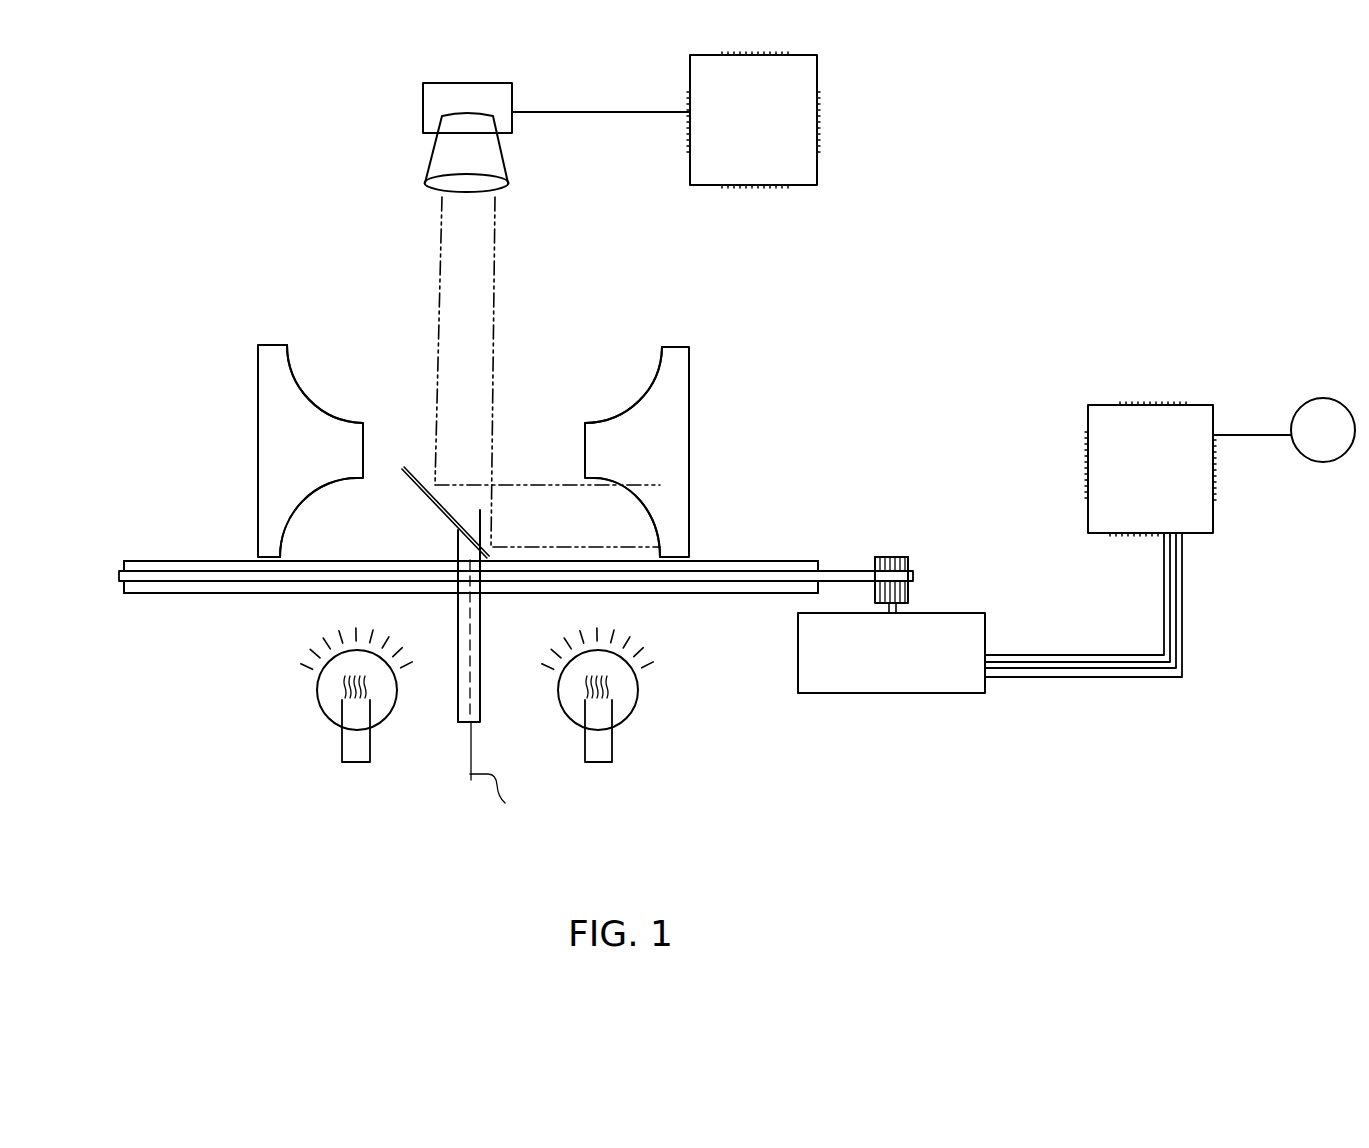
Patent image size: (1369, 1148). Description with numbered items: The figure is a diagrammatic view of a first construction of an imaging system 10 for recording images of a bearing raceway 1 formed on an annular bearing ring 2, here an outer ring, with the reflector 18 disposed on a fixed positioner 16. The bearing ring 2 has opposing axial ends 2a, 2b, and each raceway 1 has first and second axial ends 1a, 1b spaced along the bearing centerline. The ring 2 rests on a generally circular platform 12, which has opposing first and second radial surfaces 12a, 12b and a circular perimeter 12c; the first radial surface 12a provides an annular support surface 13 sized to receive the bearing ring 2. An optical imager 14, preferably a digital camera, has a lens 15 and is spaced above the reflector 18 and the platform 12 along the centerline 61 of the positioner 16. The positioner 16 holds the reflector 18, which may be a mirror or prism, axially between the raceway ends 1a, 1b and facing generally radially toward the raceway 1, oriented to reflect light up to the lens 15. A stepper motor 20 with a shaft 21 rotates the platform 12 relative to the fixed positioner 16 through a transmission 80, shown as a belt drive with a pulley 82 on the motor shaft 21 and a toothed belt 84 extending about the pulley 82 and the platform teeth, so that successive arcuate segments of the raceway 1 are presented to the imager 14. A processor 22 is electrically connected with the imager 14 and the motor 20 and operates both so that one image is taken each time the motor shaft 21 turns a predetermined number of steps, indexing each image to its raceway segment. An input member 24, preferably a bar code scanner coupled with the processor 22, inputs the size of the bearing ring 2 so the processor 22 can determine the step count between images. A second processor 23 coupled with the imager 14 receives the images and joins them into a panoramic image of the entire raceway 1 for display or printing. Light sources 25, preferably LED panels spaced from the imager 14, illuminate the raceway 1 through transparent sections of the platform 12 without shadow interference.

The imaging system 10 is at (150, 139).
The optical imager 14 is at (402, 108).
The lens 15 is at (475, 192).
The second processor 23 is at (817, 168).
The bearing ring 2 is at (222, 393).
The first axial end of bearing ring 2a is at (677, 345).
The second axial end of bearing ring 2b is at (268, 558).
The bearing raceway 1 is at (645, 374).
The first axial end of raceway 1a is at (365, 482).
The second axial end of raceway 1b is at (283, 553).
The reflector 18 is at (450, 490).
The positioner 16 is at (450, 699).
The centerline of positioner 61 is at (534, 797).
The platform 12 is at (153, 545).
The first radial surface of platform 12a is at (781, 559).
The second radial surface of platform 12b is at (733, 583).
The circular perimeter of platform 12c is at (125, 563).
The annular support surface 13 is at (704, 548).
The transmission 80 is at (853, 535).
The toothed belt 84 is at (857, 570).
The pulley 82 is at (910, 562).
The motor shaft 21 is at (902, 606).
The motor 20 is at (913, 704).
The processor 22 is at (1110, 395).
The input member 24 is at (1320, 388).
The light source 25 is at (305, 701).